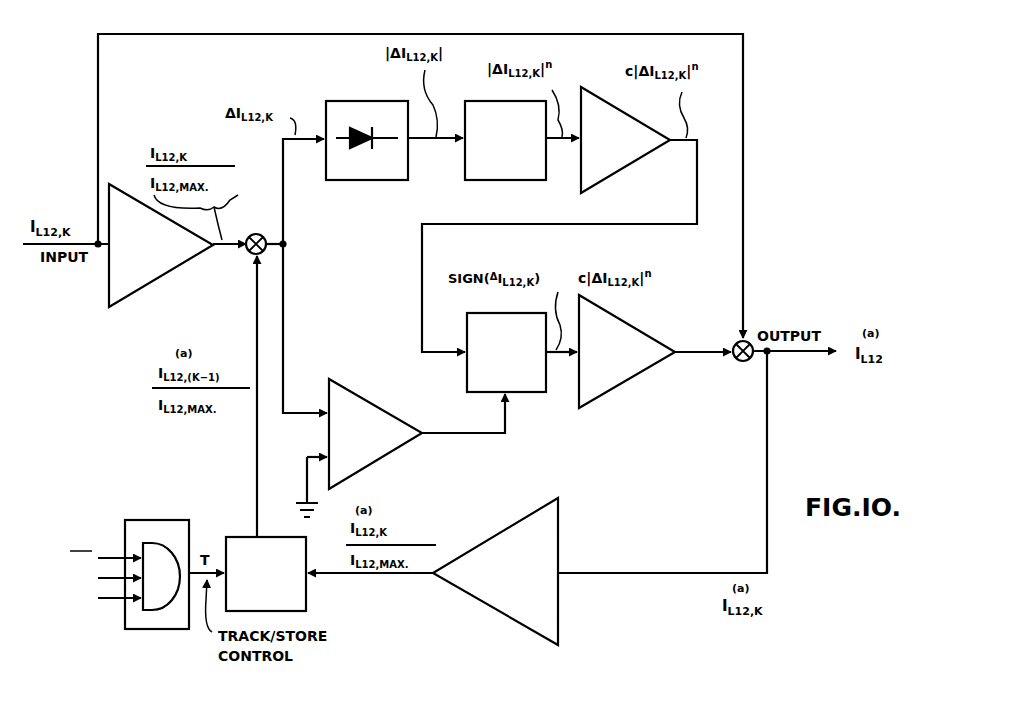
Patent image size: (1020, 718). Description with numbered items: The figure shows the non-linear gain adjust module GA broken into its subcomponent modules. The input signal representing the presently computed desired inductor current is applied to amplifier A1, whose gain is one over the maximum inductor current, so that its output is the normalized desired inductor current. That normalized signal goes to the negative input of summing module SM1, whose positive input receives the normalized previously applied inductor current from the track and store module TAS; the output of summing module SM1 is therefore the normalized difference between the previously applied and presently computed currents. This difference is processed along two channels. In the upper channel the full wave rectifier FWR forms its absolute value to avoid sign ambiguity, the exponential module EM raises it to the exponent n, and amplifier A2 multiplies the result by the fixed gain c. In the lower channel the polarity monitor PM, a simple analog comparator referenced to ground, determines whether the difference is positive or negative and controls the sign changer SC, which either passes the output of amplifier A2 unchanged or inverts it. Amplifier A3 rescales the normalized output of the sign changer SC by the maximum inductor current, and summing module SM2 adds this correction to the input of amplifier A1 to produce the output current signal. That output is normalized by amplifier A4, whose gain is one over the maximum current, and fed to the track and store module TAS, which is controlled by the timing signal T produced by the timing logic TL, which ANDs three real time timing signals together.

The gain adjust module GA is at (432, 27).
The amplifier A1 is at (163, 278).
The summing module SM1 is at (262, 234).
The full wave rectifier FWR is at (367, 130).
The exponential module EM is at (465, 160).
The amplifier A2 is at (632, 160).
The sign changer SC is at (467, 374).
The amplifier A3 is at (640, 374).
The summing module SM2 is at (715, 372).
The amplifier A4 is at (493, 532).
The track and store module TAS is at (266, 574).
The polarity monitor PM is at (372, 393).
The timing logic TL is at (129, 596).